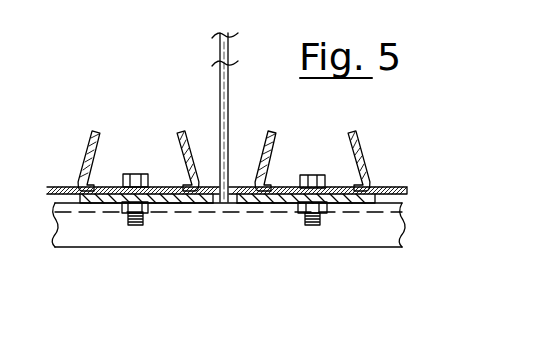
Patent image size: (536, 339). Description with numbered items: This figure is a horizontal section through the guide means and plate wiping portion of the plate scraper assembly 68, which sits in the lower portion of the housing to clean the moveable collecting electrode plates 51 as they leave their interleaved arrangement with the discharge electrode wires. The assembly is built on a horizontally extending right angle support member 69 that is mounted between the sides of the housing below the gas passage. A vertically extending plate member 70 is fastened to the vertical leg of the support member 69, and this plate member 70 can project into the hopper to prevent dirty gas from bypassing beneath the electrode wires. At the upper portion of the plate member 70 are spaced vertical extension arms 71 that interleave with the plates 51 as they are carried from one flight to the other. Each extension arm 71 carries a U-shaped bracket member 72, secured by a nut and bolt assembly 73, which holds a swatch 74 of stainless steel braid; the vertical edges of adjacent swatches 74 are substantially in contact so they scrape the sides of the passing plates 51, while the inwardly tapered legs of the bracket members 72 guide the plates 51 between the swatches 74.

The collecting electrode plate 51 is at (233, 63).
The plate scraper assembly 68 is at (380, 182).
The right angle support member 69 is at (250, 240).
The plate member 70 is at (198, 205).
The vertical extension arm 71 is at (103, 205).
The U-shaped bracket member 72 is at (191, 153).
The nut and bolt assembly 73 is at (138, 174).
The swatch of stainless steel braid 74 is at (232, 205).